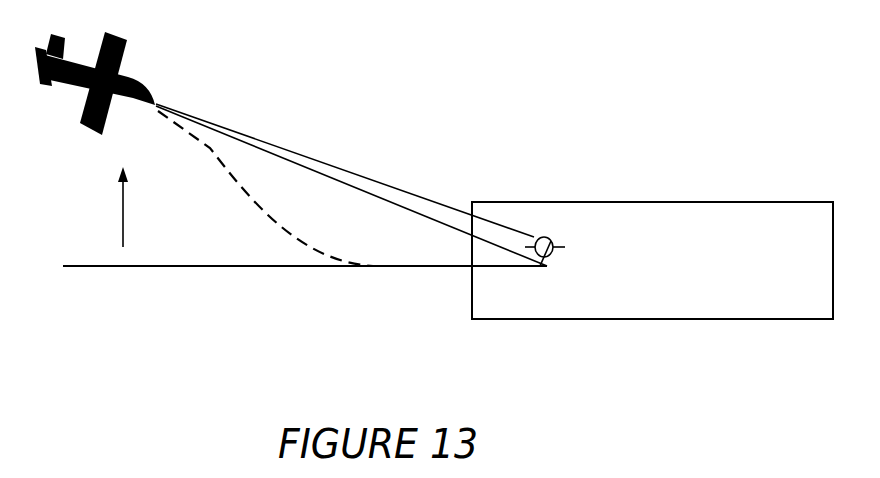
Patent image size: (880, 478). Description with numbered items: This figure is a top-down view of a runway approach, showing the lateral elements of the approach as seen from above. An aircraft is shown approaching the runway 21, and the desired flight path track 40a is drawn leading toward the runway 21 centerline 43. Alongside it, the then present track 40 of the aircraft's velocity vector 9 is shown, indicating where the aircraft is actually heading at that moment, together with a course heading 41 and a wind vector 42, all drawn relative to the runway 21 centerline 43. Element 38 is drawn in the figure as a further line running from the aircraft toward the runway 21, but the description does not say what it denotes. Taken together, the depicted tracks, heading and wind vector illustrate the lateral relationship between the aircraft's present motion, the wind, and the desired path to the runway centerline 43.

The velocity vector 9 is at (551, 241).
The runway 21 is at (707, 202).
The line of sight to target 38 is at (395, 204).
The then present track 40 is at (295, 151).
The desired flight path track 40a is at (210, 148).
The course heading 41 is at (540, 266).
The wind vector 42 is at (122, 199).
The centerline 43 is at (170, 265).